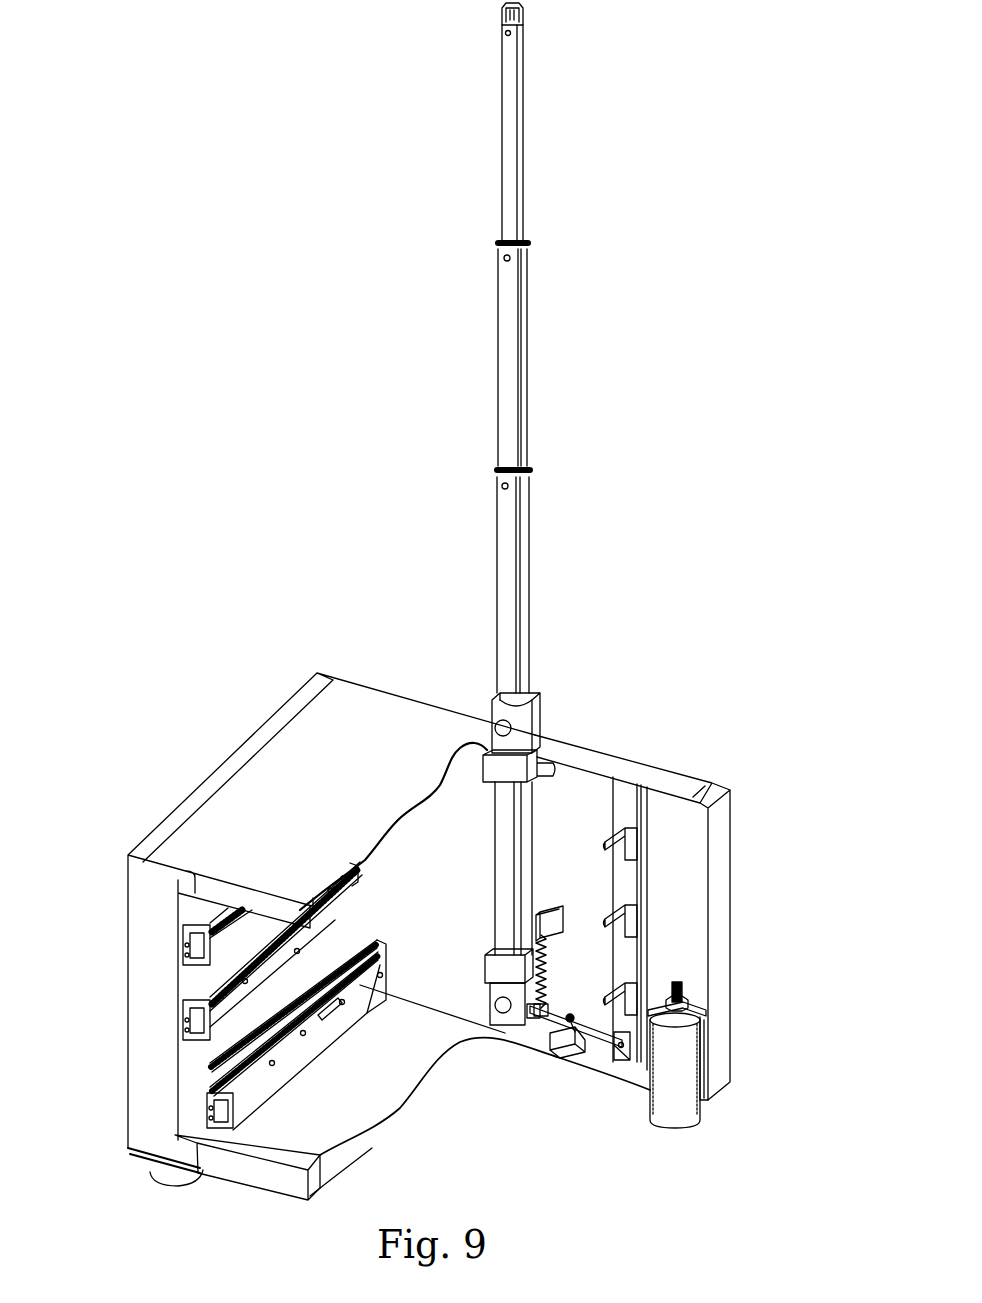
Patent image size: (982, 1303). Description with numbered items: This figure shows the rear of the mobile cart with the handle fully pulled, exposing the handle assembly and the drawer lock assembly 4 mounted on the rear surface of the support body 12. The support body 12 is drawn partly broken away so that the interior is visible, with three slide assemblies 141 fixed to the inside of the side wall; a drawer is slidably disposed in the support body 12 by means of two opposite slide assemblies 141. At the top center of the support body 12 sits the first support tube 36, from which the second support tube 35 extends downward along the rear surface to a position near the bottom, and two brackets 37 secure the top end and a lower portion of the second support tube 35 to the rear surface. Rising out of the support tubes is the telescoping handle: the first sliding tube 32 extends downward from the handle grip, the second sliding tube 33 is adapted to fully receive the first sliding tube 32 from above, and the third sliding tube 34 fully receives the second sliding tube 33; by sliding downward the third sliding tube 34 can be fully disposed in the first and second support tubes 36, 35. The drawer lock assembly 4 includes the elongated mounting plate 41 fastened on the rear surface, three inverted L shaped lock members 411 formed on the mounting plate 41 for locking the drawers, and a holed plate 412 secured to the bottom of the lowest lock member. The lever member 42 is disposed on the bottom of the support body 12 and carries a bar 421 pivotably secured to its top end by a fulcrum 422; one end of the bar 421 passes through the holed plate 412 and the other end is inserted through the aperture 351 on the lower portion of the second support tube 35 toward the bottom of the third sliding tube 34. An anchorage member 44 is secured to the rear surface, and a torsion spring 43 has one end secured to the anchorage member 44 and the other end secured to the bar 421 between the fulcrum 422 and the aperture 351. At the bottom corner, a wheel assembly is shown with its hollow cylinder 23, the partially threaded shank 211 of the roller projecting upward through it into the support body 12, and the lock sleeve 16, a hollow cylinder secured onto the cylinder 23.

The support body 12 is at (270, 776).
The slide assembly 141 is at (182, 925).
The lock sleeve 16 is at (704, 1070).
The partially threaded shank 211 is at (690, 1003).
The hollow cylinder 23 is at (686, 1098).
The first sliding tube 32 is at (512, 157).
The second sliding tube 33 is at (505, 388).
The third sliding tube 34 is at (505, 572).
The second support tube 35 is at (503, 884).
The aperture 351 is at (530, 1012).
The first support tube 36 is at (533, 723).
The bracket 37 is at (487, 765).
The drawer lock assembly 4 is at (682, 926).
The elongated mounting plate 41 is at (630, 870).
The inverted L shaped lock member 411 is at (632, 977).
The holed plate 412 is at (628, 1062).
The lever member 42 is at (581, 1042).
The bar 421 is at (545, 1012).
The fulcrum 422 is at (567, 1023).
The torsion spring 43 is at (552, 986).
The anchorage member 44 is at (551, 910).